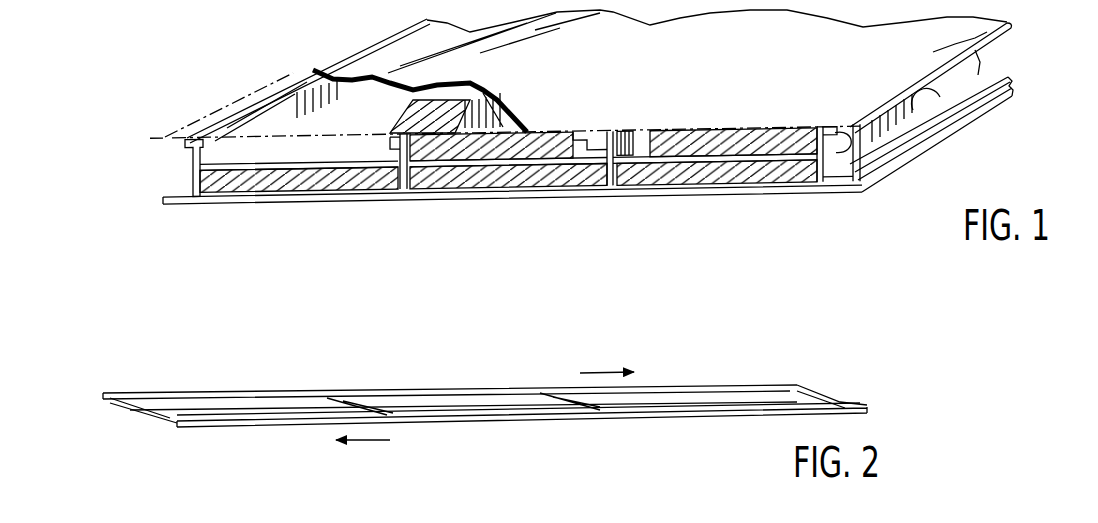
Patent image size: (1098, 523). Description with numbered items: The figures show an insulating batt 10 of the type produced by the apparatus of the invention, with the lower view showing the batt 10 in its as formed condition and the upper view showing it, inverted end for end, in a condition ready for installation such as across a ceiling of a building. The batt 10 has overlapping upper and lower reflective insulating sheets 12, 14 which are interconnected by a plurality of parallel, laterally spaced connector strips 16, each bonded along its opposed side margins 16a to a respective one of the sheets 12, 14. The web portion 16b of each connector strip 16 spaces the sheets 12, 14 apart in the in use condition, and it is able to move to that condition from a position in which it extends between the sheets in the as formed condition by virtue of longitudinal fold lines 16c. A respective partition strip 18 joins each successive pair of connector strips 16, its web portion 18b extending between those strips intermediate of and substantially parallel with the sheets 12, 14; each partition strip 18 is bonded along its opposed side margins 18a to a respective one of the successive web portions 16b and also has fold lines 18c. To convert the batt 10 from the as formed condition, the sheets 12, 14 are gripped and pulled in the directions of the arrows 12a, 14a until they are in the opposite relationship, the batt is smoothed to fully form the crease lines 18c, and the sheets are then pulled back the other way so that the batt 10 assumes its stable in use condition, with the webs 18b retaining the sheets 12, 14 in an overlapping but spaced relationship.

In FIG. 2, the insulating batt 10 is at (175, 448).
In FIG. 1, the upper reflective insulating sheet 12 is at (983, 40).
In FIG. 2, the upper reflective insulating sheet 12 is at (487, 417).
In FIG. 2, the arrow 12a is at (372, 440).
In FIG. 1, the lower reflective insulating sheet 14 is at (730, 195).
In FIG. 2, the lower reflective insulating sheet 14 is at (448, 390).
In FIG. 2, the arrow 14a is at (600, 373).
In FIG. 1, the connector strip 16 is at (188, 154).
In FIG. 2, the connector strip 16 is at (855, 372).
In FIG. 1, the side margin 16a is at (846, 132).
In FIG. 1, the web portion 16b is at (863, 187).
In FIG. 1, the longitudinal fold line 16c is at (977, 102).
In FIG. 1, the partition strip 18 is at (668, 145).
In FIG. 2, the partition strip 18 is at (241, 417).
In FIG. 1, the side margin 18a is at (620, 163).
In FIG. 1, the web portion 18b is at (755, 147).
In FIG. 1, the fold line 18c is at (440, 152).